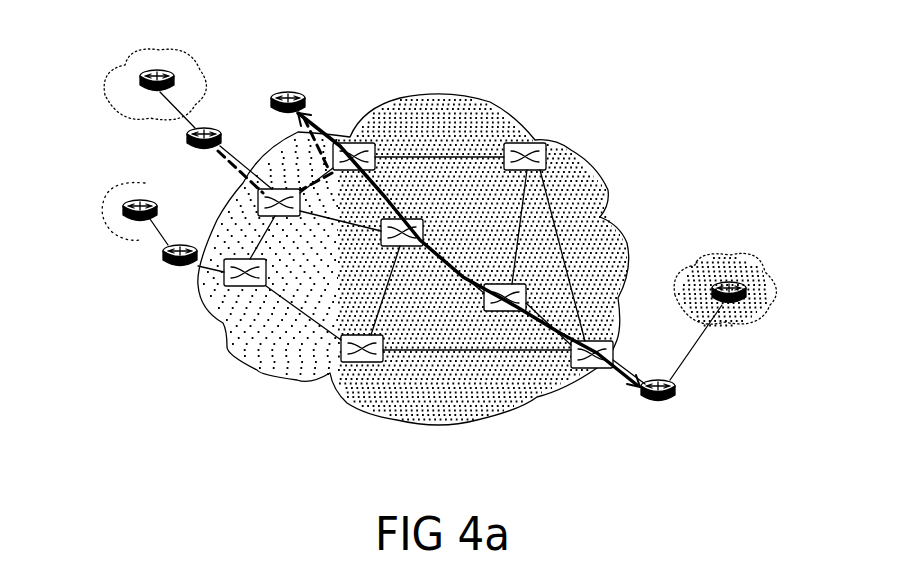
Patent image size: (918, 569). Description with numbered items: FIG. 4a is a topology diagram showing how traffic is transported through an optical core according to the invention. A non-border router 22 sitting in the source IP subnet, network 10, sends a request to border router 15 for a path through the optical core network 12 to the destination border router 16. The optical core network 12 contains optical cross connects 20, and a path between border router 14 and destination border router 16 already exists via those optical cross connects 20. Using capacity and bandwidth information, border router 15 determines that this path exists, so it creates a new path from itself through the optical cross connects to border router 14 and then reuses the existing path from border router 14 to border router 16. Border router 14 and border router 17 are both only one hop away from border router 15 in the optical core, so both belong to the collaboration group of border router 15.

The network 10 is at (103, 106).
The non-border router 22 is at (166, 70).
The border router 14 is at (292, 86).
The border router 15 is at (200, 157).
The border router 17 is at (161, 266).
The destination border router 16 is at (672, 405).
The optical core network 12 is at (455, 92).
The optical cross connects 20 is at (350, 137).